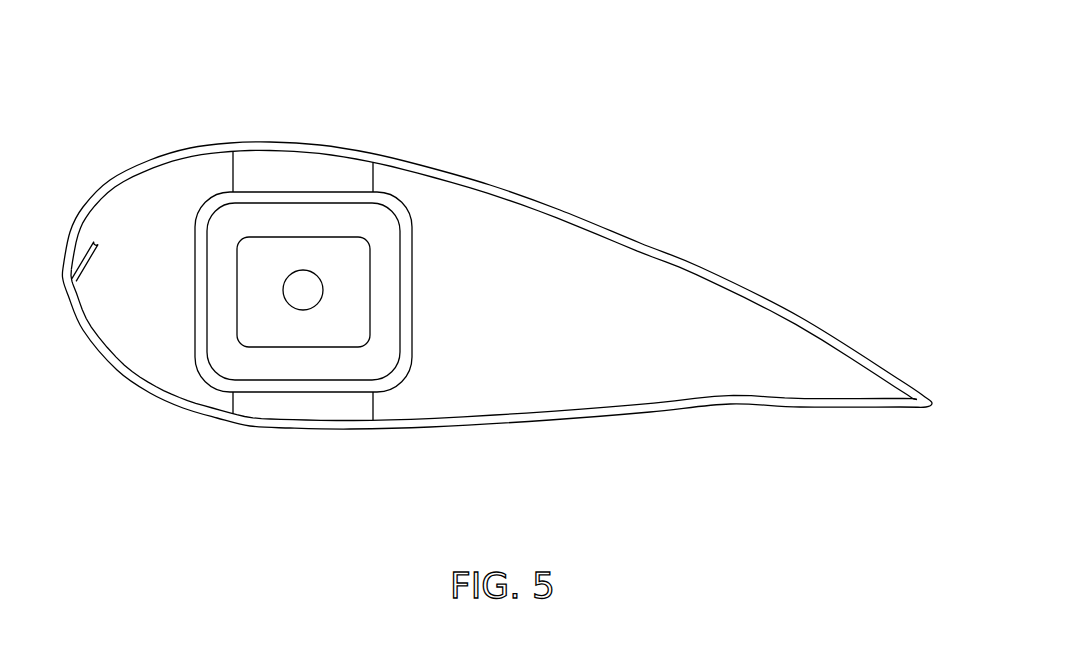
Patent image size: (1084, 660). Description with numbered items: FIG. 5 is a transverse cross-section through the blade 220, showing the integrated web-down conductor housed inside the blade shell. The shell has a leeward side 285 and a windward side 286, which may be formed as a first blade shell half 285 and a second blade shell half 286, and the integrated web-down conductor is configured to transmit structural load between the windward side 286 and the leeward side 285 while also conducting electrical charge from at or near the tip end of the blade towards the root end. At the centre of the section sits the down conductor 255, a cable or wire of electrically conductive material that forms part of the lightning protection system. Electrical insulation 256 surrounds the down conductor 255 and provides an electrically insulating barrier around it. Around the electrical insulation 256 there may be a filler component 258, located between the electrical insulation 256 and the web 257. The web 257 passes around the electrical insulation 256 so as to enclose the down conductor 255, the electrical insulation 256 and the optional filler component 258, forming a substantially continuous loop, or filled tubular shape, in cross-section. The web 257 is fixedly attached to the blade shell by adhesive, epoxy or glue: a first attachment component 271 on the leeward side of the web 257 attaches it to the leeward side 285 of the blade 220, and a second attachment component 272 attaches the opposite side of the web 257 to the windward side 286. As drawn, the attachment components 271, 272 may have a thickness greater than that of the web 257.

The blade 220 is at (497, 274).
The down conductor 255 is at (305, 280).
The electrical insulation 256 is at (273, 237).
The web 257 is at (243, 383).
The filler component 258 is at (380, 312).
The first attachment component 271 is at (267, 175).
The second attachment component 272 is at (325, 410).
The leeward side 285 is at (663, 247).
The windward side 286 is at (612, 412).